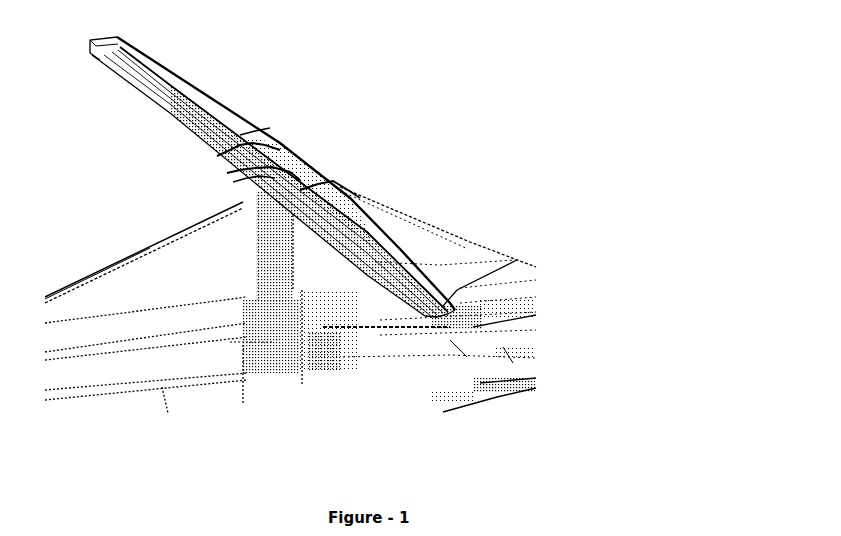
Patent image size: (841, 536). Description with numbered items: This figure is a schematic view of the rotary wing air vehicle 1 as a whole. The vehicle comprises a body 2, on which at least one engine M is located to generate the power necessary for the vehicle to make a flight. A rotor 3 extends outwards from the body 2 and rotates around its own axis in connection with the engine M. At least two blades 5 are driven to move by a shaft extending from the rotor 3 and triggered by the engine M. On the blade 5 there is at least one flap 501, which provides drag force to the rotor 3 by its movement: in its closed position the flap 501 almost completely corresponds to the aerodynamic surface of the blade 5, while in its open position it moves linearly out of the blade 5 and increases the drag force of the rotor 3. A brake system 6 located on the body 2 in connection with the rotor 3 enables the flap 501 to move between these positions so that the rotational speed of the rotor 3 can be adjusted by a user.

The rotary wing air vehicle 1 is at (587, 167).
The body 2 is at (143, 277).
The rotor 3 is at (270, 343).
The blade 5 is at (377, 240).
The flap 501 is at (267, 131).
The brake system 6 is at (360, 300).
The engine M is at (337, 343).